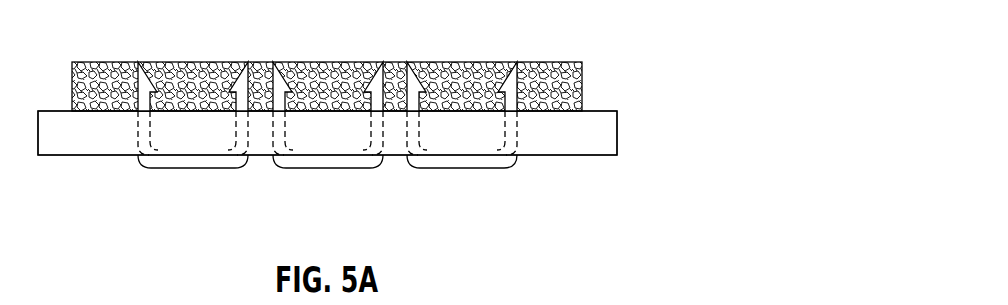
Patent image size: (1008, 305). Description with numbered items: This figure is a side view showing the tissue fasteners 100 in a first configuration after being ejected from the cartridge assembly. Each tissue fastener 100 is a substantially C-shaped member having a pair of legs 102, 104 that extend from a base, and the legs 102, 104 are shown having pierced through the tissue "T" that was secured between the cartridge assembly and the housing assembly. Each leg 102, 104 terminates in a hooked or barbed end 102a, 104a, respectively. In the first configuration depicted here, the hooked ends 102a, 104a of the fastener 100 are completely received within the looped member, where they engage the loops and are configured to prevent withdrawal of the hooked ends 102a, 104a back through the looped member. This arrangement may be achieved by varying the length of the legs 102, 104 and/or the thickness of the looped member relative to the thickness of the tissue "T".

The tissue fastener 100 is at (167, 187).
The leg 102 is at (431, 61).
The hooked end 102a is at (411, 61).
The leg 104 is at (515, 141).
The hooked end 104a is at (517, 62).
The tissue T is at (617, 130).